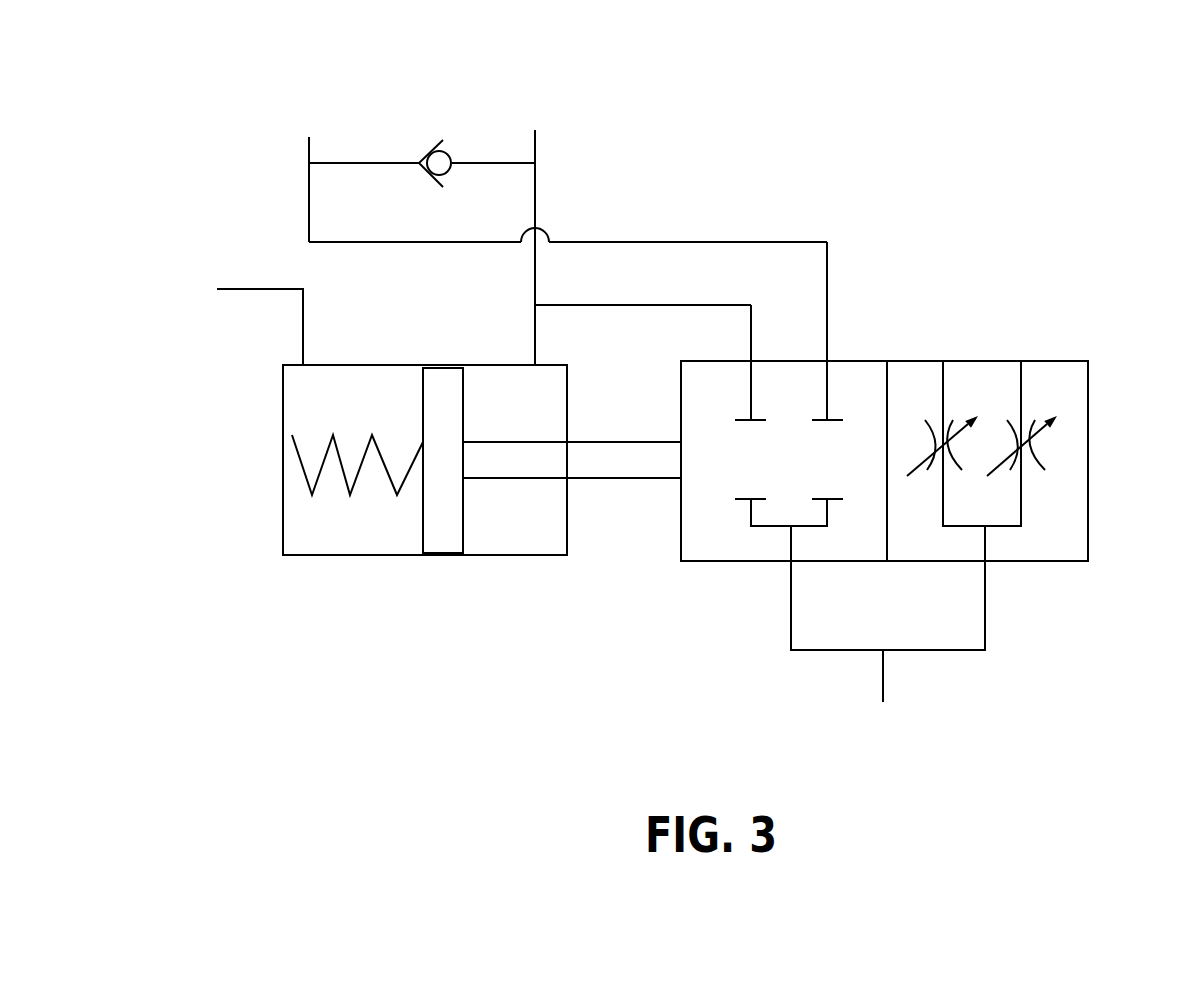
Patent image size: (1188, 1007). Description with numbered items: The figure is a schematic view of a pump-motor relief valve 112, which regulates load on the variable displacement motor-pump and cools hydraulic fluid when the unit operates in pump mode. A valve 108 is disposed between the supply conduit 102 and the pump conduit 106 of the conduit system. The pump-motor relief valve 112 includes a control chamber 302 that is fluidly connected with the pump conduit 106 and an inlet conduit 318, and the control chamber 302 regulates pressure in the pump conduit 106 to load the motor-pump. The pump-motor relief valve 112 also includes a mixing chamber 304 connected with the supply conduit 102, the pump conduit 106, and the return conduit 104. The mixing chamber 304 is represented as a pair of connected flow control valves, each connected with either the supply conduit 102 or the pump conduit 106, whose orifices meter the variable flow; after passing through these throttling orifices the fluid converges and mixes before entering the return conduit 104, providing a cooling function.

The supply conduit 102 is at (309, 208).
The return conduit 104 is at (883, 674).
The pump conduit 106 is at (536, 207).
The valve 108 is at (410, 127).
The pump-motor relief valve 112 is at (1001, 153).
The control chamber 302 is at (335, 555).
The mixing chamber 304 is at (1088, 383).
The inlet conduit 318 is at (245, 289).